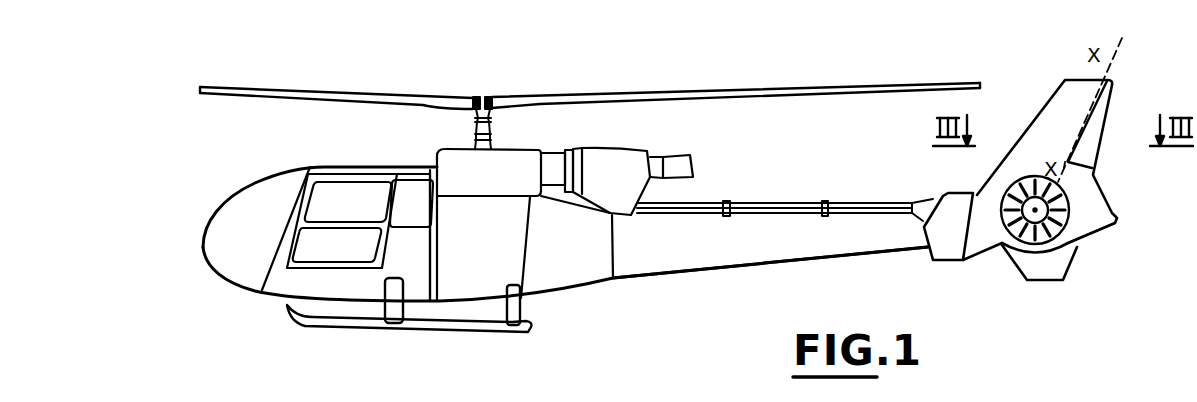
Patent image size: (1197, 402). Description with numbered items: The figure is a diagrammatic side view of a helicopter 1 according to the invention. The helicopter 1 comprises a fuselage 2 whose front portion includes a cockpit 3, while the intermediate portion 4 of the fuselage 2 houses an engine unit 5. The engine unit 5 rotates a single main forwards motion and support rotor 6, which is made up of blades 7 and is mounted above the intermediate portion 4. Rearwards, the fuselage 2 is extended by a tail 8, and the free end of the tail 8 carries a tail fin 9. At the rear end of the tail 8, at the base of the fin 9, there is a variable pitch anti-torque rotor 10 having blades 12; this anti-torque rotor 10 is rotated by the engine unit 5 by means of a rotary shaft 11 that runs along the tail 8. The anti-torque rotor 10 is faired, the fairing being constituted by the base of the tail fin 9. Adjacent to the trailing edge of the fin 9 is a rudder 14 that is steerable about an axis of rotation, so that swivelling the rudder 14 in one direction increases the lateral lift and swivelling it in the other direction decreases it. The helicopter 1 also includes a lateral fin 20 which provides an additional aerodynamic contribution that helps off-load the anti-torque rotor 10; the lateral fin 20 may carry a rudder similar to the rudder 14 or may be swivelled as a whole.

The helicopter 1 is at (565, 251).
The fuselage 2 is at (445, 293).
The cockpit 3 is at (325, 194).
The intermediate portion 4 is at (490, 233).
The engine unit 5 is at (605, 158).
The main rotor 6 is at (590, 96).
The blades 7 is at (288, 91).
The tail 8 is at (787, 247).
The tail fin 9 is at (1050, 112).
The anti-torque rotor 10 is at (1025, 233).
The rotary shaft 11 is at (748, 204).
The blades 12 is at (1073, 217).
The rudder 14 is at (1102, 103).
The lateral fin 20 is at (945, 251).